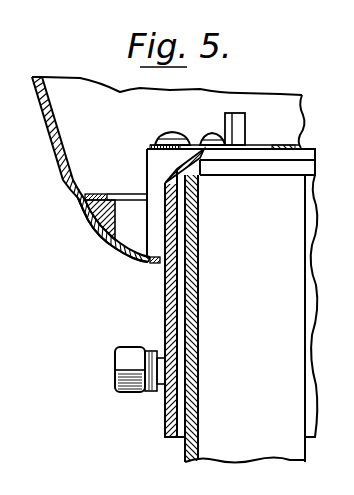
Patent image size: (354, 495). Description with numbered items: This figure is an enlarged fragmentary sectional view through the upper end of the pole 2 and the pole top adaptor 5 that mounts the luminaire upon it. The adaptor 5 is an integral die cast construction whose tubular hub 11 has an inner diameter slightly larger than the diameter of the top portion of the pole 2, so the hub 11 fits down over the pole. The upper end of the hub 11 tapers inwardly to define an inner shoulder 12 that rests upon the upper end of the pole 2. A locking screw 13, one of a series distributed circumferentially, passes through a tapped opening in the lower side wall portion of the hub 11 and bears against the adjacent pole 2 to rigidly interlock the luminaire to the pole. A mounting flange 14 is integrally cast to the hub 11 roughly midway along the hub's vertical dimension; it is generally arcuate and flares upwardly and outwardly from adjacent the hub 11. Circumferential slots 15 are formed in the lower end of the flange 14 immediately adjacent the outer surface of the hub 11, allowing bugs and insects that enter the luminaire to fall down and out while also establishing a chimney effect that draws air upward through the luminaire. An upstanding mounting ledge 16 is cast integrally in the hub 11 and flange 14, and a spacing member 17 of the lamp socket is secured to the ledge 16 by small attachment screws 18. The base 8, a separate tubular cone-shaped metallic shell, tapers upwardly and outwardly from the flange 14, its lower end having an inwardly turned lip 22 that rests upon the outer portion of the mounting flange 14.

The pole 2 is at (198, 283).
The pole top adaptor 5 is at (117, 256).
The base 8 is at (47, 141).
The tubular hub 11 is at (165, 323).
The inner shoulder 12 is at (174, 171).
The locking screw 13 is at (118, 355).
The mounting flange 14 is at (85, 213).
The circumferential slot 15 is at (156, 265).
The mounting ledge 16 is at (147, 157).
The spacing member 17 is at (244, 129).
The attachment screw 18 is at (224, 140).
The inwardly turned lip 22 is at (97, 193).